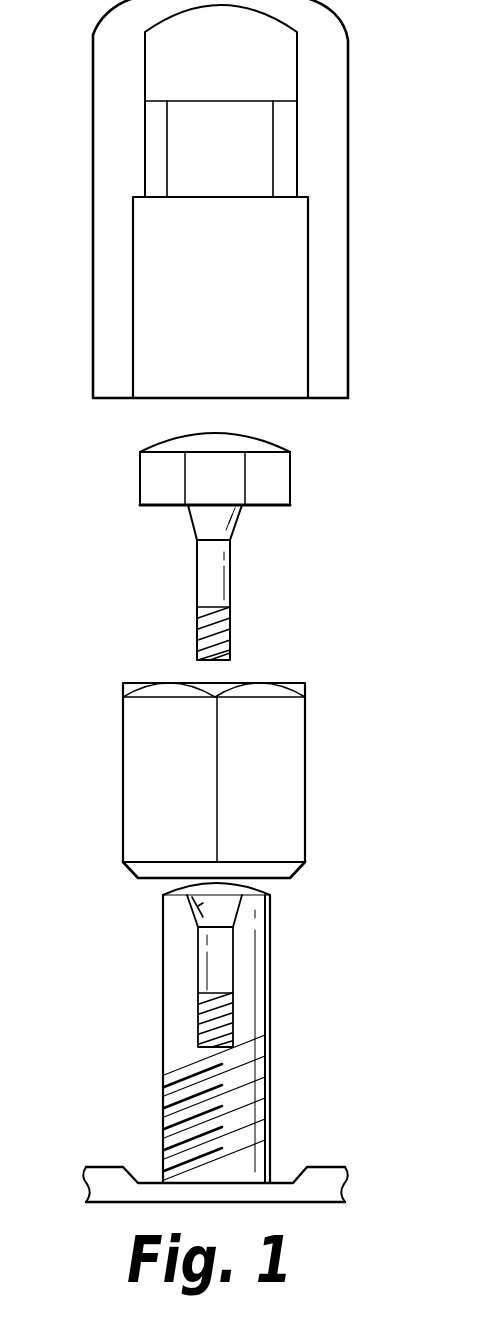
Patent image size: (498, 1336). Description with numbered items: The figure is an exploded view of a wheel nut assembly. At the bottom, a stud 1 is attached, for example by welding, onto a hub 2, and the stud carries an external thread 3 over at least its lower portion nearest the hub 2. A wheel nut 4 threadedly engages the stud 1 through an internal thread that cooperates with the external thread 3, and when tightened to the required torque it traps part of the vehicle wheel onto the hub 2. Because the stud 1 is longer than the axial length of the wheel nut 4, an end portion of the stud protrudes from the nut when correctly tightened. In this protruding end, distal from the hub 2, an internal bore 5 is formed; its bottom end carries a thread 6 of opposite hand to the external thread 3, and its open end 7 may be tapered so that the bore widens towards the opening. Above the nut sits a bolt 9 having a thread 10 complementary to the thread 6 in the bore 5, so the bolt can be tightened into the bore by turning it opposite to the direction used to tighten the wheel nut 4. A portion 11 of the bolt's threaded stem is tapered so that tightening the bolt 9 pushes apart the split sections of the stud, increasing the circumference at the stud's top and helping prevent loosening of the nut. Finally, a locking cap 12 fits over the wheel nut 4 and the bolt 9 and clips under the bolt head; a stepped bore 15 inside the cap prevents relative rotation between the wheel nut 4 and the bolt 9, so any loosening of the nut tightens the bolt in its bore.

The stud 1 is at (270, 1068).
The hub 2 is at (332, 1167).
The external thread 3 is at (200, 1068).
The wheel nut 4 is at (300, 745).
The internal bore 5 is at (190, 904).
The thread 6 is at (213, 987).
The open end 7 is at (232, 957).
The bolt 9 is at (292, 490).
The thread 10 is at (231, 627).
The tapered portion 11 is at (237, 533).
The cap 12 is at (348, 253).
The stepped bore 15 is at (307, 360).